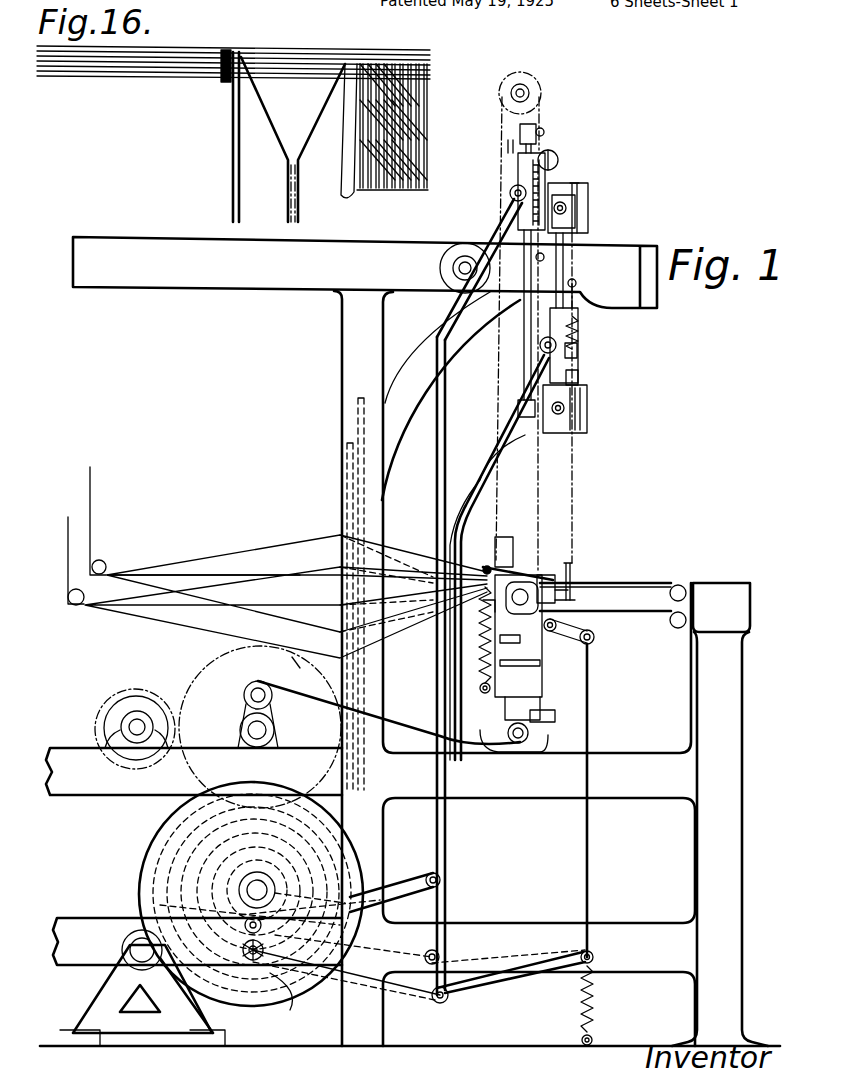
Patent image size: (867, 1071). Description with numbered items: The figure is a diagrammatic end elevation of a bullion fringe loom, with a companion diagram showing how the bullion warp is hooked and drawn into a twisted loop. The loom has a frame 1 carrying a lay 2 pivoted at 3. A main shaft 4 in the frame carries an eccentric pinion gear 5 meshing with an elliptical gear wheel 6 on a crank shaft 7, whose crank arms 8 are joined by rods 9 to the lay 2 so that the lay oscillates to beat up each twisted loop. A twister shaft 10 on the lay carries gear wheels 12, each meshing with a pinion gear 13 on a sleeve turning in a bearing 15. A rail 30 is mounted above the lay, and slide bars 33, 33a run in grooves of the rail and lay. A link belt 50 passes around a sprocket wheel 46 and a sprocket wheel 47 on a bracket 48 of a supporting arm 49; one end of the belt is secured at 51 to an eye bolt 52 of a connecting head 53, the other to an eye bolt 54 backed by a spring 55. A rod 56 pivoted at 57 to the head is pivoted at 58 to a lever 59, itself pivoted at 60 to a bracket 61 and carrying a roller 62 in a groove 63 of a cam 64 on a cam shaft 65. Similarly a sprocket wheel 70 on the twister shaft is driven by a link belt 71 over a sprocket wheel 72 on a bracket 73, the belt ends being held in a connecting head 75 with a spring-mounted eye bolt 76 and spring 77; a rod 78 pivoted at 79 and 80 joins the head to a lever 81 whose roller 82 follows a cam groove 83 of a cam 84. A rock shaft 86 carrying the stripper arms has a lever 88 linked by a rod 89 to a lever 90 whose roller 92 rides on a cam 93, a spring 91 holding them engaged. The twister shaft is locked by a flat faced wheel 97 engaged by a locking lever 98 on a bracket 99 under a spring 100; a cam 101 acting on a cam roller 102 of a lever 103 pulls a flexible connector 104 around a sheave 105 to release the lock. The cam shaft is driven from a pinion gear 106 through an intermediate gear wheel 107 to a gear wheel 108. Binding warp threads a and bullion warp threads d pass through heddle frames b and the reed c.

In FIG. 1, the frame 1 is at (340, 300).
In FIG. 1, the lay 2 is at (508, 527).
In FIG. 1, the pivot 3 is at (560, 150).
In FIG. 1, the main shaft 4 is at (120, 727).
In FIG. 1, the eccentric pinion gear 5 is at (127, 777).
In FIG. 1, the elliptical gear wheel 6 is at (190, 662).
In FIG. 1, the crank shaft 7 is at (252, 742).
In FIG. 1, the crank arms 8 is at (243, 703).
In FIG. 1, the rods 9 is at (400, 706).
In FIG. 1, the twister shaft 10 is at (560, 603).
In FIG. 1, the gear wheels 12 is at (520, 606).
In FIG. 1, the pinion gear 13 is at (483, 608).
In FIG. 1, the bearing 15 is at (483, 571).
In FIG. 1, the rail 30 is at (513, 550).
In FIG. 1, the slide bar 33 is at (497, 555).
In FIG. 1, the slide bar 33a is at (521, 647).
In FIG. 1, the sprocket wheel 46 is at (572, 568).
In FIG. 1, the sprocket wheel 47 is at (588, 198).
In FIG. 1, the bracket 48 is at (578, 190).
In FIG. 1, the supporting arms 49 is at (560, 170).
In FIG. 1, the link belt 50 is at (575, 267).
In FIG. 1, the securing point 51 is at (588, 407).
In FIG. 1, the eye bolt 52 is at (580, 376).
In FIG. 1, the connecting head 53 is at (578, 346).
In FIG. 1, the eye bolt 54 is at (582, 292).
In FIG. 1, the spring 55 is at (578, 324).
In FIG. 1, the rod 56 is at (492, 445).
In FIG. 1, the pivot 57 is at (540, 345).
In FIG. 1, the pivot 58 is at (447, 1000).
In FIG. 1, the lever 59 is at (365, 988).
In FIG. 1, the pivot 60 is at (135, 948).
In FIG. 1, the bracket 61 is at (104, 990).
In FIG. 1, the roller 62 is at (258, 987).
In FIG. 1, the groove 63 is at (242, 975).
In FIG. 1, the cam 64 is at (162, 840).
In FIG. 1, the cam shaft 65 is at (250, 886).
In FIG. 1, the sprocket wheel 70 is at (520, 670).
In FIG. 1, the link belt 71 is at (502, 110).
In FIG. 1, the sprocket wheel 72 is at (541, 85).
In FIG. 1, the bracket 73 is at (520, 134).
In FIG. 1, the connecting head 75 is at (518, 172).
In FIG. 1, the eye bolt 76 is at (546, 130).
In FIG. 1, the spring 77 is at (508, 158).
In FIG. 1, the rod 78 is at (500, 210).
In FIG. 1, the pivot 79 is at (510, 193).
In FIG. 1, the pivot 80 is at (430, 875).
In FIG. 1, the lever 81 is at (398, 893).
In FIG. 1, the roller 82 is at (298, 916).
In FIG. 1, the cam groove 83 is at (235, 908).
In FIG. 1, the cam 84 is at (143, 837).
In FIG. 1, the rock shaft 86 is at (590, 645).
In FIG. 1, the lever 88 is at (572, 633).
In FIG. 1, the rod 89 is at (590, 835).
In FIG. 1, the lever 90 is at (487, 977).
In FIG. 1, the spring 91 is at (593, 995).
In FIG. 1, the roller 92 is at (290, 997).
In FIG. 1, the cam 93 is at (307, 843).
In FIG. 1, the flat faced wheel 97 is at (562, 592).
In FIG. 1, the locking lever 98 is at (553, 575).
In FIG. 1, the bracket 99 is at (533, 728).
In FIG. 1, the spring 100 is at (485, 637).
In FIG. 1, the cam 101 is at (250, 878).
In FIG. 1, the cam roller 102 is at (200, 990).
In FIG. 1, the lever 103 is at (392, 952).
In FIG. 1, the flexible connector 104 is at (495, 540).
In FIG. 1, the sheave 105 is at (442, 265).
In FIG. 1, the pinion gear 106 is at (128, 688).
In FIG. 1, the intermediate gear wheel 107 is at (292, 657).
In FIG. 1, the gear wheel 108 is at (180, 882).
In FIG. 16, the binding warp threads a is at (180, 72).
In FIG. 1, the binding warp threads a is at (400, 548).
In FIG. 1, the heddle frames b is at (352, 508).
In FIG. 16, the reed c is at (223, 84).
In FIG. 16, the bullion warp threads d is at (283, 54).
In FIG. 1, the bullion warp threads d is at (293, 588).